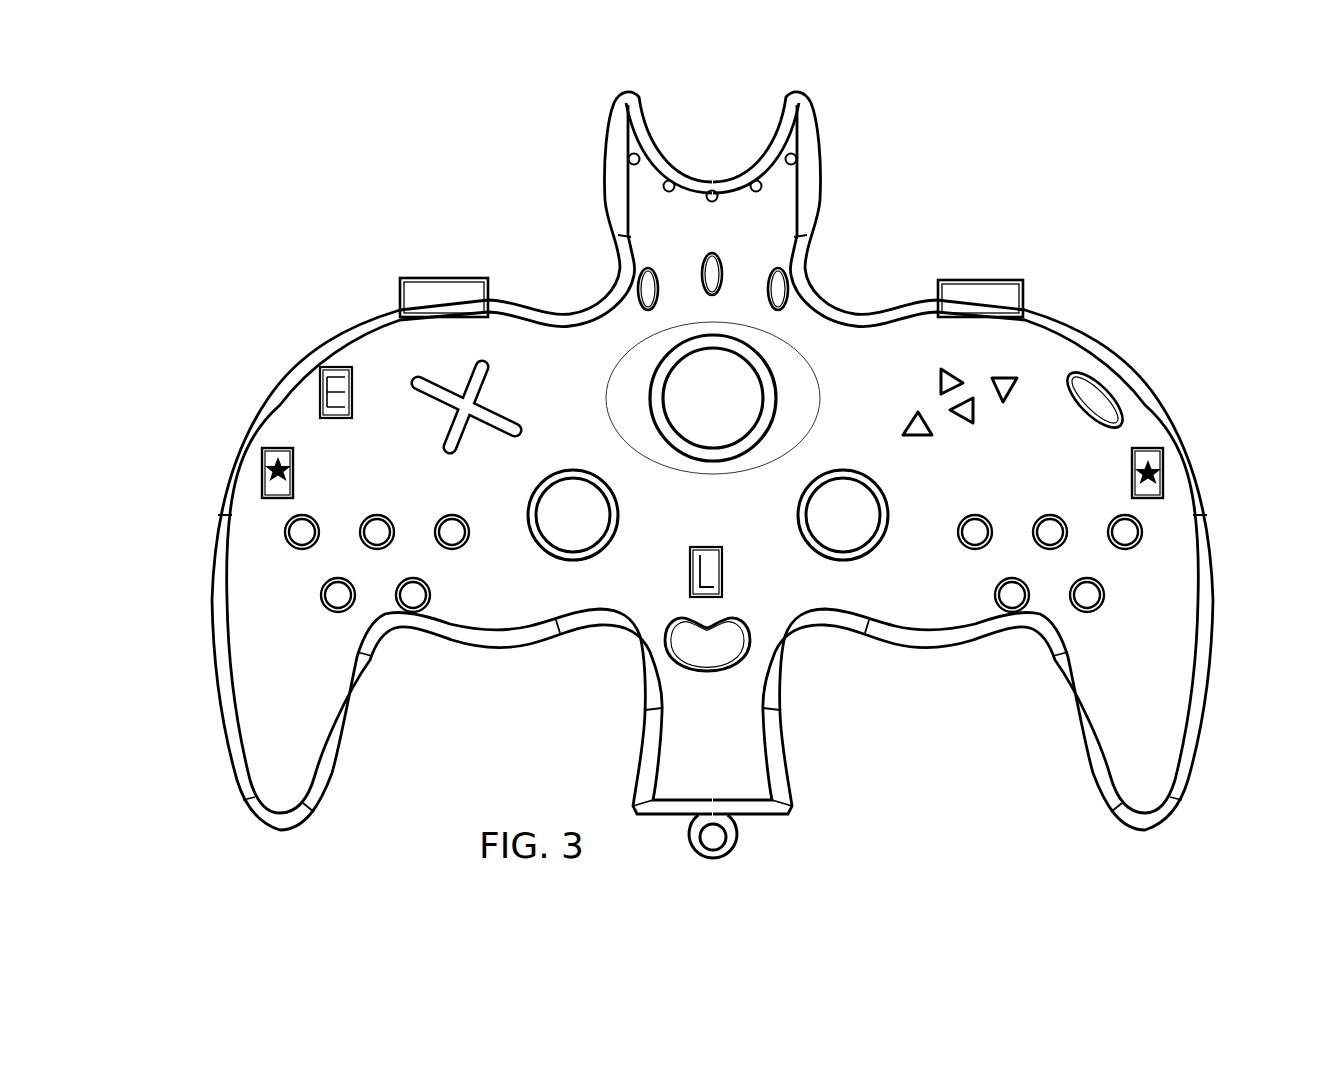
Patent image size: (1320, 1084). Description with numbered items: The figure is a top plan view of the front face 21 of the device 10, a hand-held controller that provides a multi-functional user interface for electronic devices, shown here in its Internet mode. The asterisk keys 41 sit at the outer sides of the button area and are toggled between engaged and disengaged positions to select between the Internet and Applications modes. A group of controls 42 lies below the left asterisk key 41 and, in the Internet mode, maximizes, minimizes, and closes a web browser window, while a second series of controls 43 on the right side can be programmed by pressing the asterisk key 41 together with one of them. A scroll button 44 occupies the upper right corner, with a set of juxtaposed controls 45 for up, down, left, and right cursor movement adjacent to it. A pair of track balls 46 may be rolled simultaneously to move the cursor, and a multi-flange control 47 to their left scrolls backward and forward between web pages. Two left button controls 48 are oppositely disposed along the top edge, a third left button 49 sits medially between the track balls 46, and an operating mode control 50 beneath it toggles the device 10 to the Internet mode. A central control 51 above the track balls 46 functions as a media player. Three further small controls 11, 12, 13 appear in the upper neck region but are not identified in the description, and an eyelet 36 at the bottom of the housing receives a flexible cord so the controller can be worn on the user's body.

The device 10 is at (701, 476).
The center oval button 11 is at (712, 273).
The left oval button 12 is at (645, 290).
The right oval button 13 is at (778, 290).
The front face 21 is at (893, 360).
The eyelet 36 is at (712, 860).
The "*" keys 41 is at (265, 460).
The group of controls 42 is at (299, 621).
The second series of controls 43 is at (1048, 642).
The scroll button 44 is at (1098, 385).
The juxtaposed controls 45 is at (1021, 310).
The track balls 46 is at (573, 515).
The multi-flange control 47 is at (414, 382).
The pair of controls 48 is at (445, 280).
The third "left" button 49 is at (690, 572).
The operating mode control 50 is at (707, 670).
The central control 51 is at (752, 366).